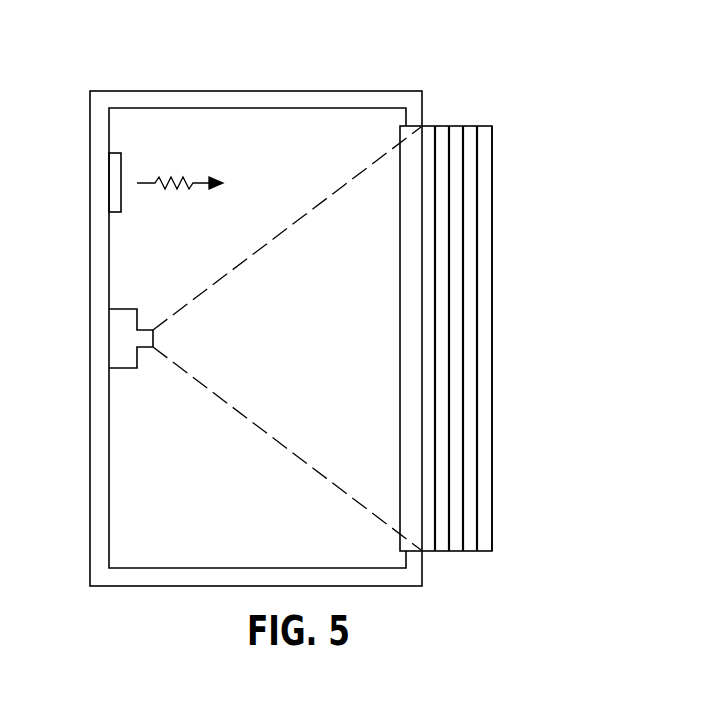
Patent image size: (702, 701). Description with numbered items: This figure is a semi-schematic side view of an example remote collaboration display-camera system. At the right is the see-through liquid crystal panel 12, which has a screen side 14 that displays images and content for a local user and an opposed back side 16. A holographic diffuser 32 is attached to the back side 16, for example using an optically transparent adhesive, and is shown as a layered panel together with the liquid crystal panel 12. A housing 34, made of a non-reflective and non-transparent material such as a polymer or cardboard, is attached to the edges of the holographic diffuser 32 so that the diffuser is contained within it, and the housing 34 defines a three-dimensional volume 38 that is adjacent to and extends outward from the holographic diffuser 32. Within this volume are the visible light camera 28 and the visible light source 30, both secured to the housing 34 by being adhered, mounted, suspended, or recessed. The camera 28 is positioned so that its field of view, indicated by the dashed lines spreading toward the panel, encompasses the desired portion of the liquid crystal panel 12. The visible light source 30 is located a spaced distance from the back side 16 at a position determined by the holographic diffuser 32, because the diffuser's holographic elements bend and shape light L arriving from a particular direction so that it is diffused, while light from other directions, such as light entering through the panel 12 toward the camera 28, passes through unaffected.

The housing 34 is at (138, 104).
The visible light source 30 is at (113, 183).
The visible light camera 28 is at (118, 342).
The three-dimensional volume 38 is at (189, 249).
The light L is at (175, 182).
The liquid crystal panel 12 is at (497, 116).
The holographic diffuser 32 is at (410, 207).
The back side 16 is at (422, 342).
The screen side 14 is at (493, 482).